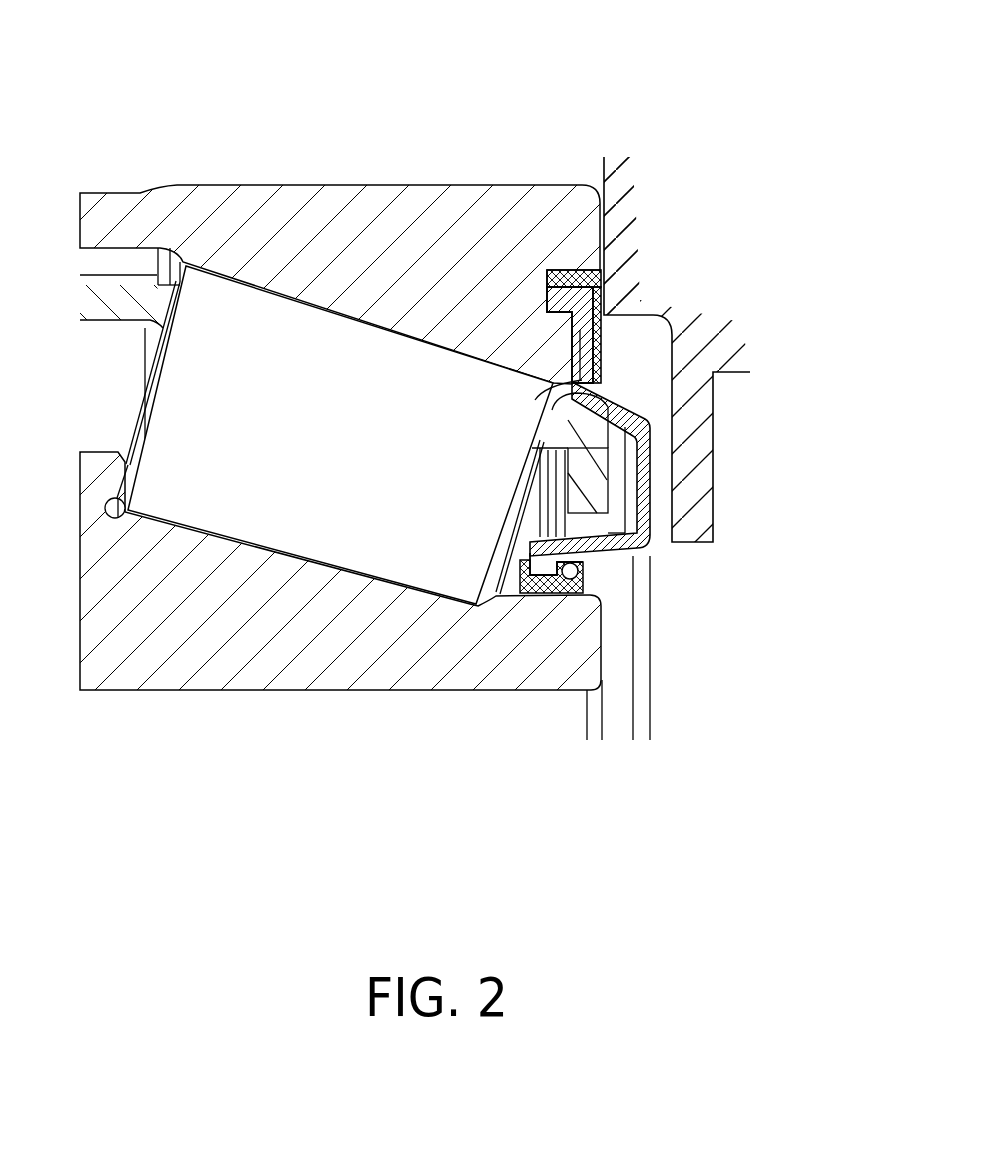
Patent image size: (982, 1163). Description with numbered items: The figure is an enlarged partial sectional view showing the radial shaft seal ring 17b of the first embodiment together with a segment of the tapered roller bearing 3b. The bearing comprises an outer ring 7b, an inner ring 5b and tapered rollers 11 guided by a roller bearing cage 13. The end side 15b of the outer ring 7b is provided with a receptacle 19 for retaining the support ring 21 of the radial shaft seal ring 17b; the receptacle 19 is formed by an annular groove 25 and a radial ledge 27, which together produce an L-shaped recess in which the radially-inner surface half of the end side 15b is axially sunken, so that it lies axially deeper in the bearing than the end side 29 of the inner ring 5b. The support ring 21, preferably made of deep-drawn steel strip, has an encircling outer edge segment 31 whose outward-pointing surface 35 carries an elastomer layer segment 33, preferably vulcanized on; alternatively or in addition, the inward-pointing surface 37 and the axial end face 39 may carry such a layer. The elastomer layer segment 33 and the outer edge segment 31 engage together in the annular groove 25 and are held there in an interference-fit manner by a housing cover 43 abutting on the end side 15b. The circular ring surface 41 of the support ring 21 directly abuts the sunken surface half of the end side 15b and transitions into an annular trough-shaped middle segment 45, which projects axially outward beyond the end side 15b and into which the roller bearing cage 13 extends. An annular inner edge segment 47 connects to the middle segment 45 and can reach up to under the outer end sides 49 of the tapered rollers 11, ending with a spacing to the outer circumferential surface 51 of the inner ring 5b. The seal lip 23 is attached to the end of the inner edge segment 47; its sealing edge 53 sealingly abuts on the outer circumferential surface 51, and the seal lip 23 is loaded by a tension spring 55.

The tapered roller bearing 3b is at (357, 104).
The outer ring 7b is at (247, 210).
The inner ring 5b is at (193, 657).
The tapered rollers 11 is at (340, 451).
The outer end sides of the tapered rollers 49 is at (530, 483).
The end side of the outer ring 15b is at (607, 218).
The radial shaft seal ring 17b is at (662, 560).
The roller bearing cage 13 is at (576, 448).
The receptacle 19 is at (618, 275).
The support ring 21 is at (660, 418).
The seal lip 23 is at (543, 583).
The annular groove 25 is at (542, 287).
The radial ledge 27 is at (620, 326).
The end side of the inner ring 29 is at (600, 652).
The outer edge segment 31 is at (558, 300).
The elastomer layer segment 33 is at (573, 268).
The outward-pointing surface 35 is at (592, 268).
The inward-pointing surface 37 is at (556, 340).
The axial end face 39 is at (547, 300).
The circular ring surface 41 is at (572, 384).
The housing cover 43 is at (711, 392).
The annular trough-shaped middle segment 45 is at (635, 476).
The inner edge segment 47 is at (530, 553).
The outer circumferential surface of the inner ring 51 is at (591, 584).
The sealing edge 53 is at (570, 597).
The tension spring 55 is at (586, 566).